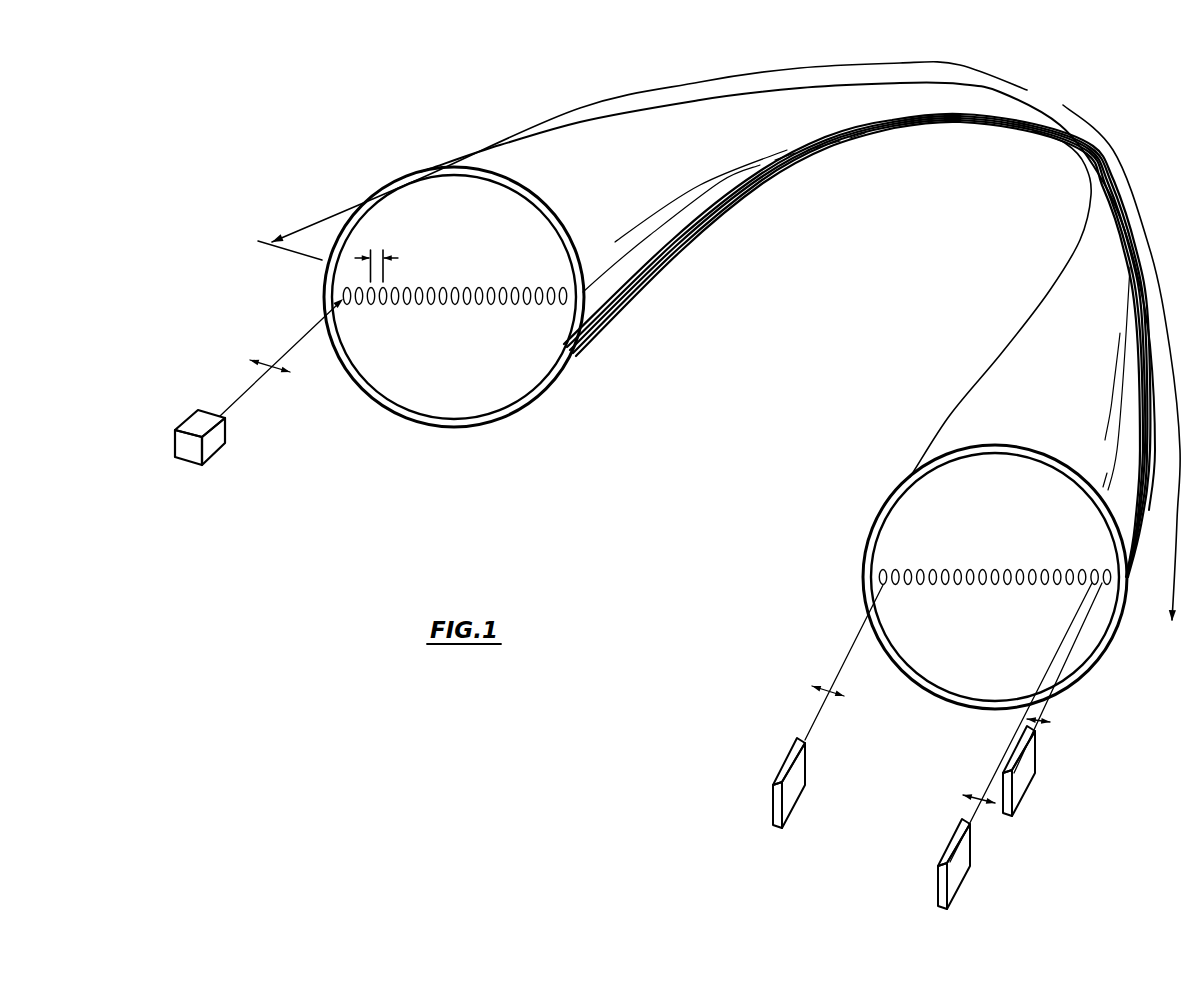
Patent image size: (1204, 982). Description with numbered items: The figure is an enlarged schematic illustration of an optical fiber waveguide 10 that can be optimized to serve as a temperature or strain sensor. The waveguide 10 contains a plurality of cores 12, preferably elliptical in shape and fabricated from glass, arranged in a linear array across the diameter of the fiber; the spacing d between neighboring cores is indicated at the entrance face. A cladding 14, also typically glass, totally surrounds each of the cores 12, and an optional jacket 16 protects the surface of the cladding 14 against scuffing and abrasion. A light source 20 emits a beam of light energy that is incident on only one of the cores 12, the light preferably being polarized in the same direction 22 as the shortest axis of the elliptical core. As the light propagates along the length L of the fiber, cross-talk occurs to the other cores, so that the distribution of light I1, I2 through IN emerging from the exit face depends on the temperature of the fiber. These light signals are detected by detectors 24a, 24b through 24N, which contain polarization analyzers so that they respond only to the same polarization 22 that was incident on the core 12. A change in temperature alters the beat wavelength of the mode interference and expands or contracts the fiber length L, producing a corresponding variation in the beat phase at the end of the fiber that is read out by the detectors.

The waveguide 10 is at (619, 288).
The cores 12 is at (342, 296).
The cladding 14 is at (425, 408).
The jacket 16 is at (458, 424).
The light source 20 is at (195, 422).
The polarization direction 22 is at (270, 362).
The detector 24N is at (790, 803).
The detector 24a is at (1023, 792).
The detector 24b is at (958, 877).
The fiber length L is at (719, 341).
The fiber spacing d is at (383, 266).
The light distribution IN is at (815, 722).
The light distribution I1 is at (1043, 710).
The light distribution I2 is at (973, 813).